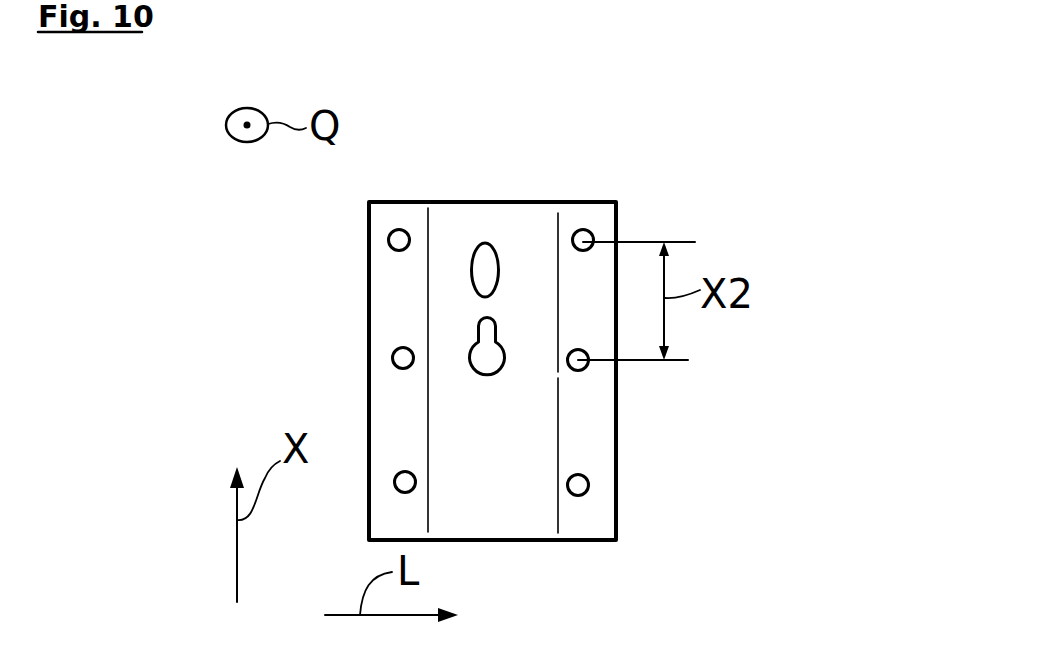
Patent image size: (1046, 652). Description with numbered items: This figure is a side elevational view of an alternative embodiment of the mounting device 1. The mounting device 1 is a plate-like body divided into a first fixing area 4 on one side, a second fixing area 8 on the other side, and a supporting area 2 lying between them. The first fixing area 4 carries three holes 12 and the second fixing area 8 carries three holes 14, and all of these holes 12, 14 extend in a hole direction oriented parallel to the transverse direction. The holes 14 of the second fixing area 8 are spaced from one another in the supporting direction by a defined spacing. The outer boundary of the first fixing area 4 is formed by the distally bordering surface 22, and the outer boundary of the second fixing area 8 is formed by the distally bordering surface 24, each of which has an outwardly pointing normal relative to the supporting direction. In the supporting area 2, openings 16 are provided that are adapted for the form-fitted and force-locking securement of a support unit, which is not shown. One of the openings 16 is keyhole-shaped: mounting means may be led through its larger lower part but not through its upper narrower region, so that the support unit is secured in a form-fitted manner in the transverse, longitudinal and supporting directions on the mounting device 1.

The mounting device 1 is at (530, 128).
The supporting area 2 is at (466, 176).
The first fixing area 4 is at (383, 312).
The second fixing area 8 is at (578, 522).
The holes 12 is at (393, 483).
The holes 14 is at (588, 492).
The openings 16 is at (500, 258).
The distally bordering surface of the first fixing area 22 is at (367, 270).
The distally bordering surface of the second fixing area 24 is at (617, 390).